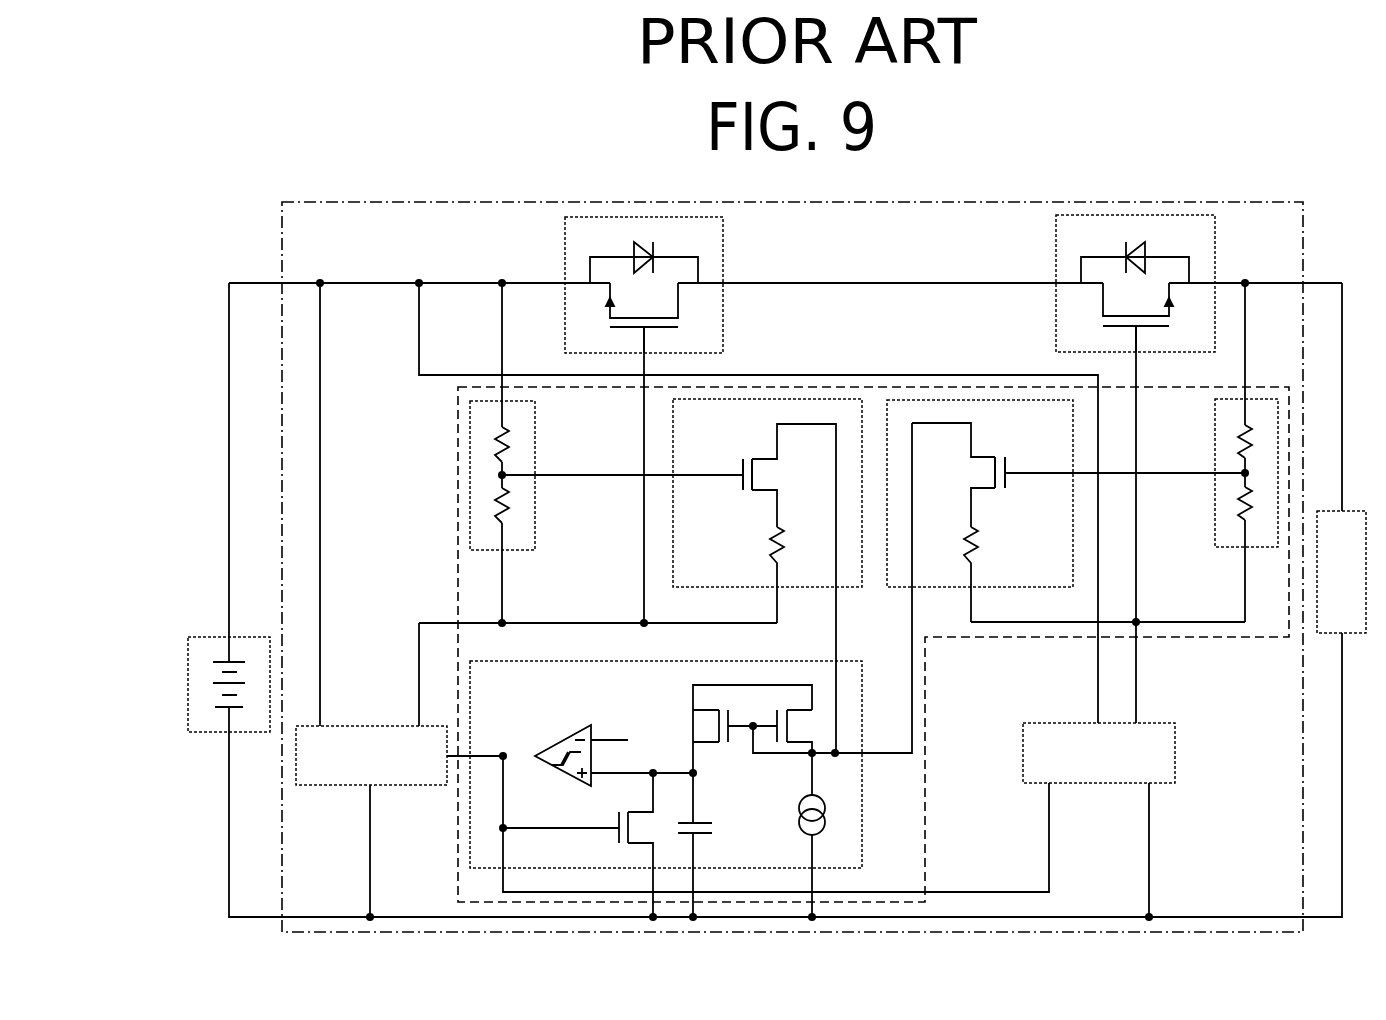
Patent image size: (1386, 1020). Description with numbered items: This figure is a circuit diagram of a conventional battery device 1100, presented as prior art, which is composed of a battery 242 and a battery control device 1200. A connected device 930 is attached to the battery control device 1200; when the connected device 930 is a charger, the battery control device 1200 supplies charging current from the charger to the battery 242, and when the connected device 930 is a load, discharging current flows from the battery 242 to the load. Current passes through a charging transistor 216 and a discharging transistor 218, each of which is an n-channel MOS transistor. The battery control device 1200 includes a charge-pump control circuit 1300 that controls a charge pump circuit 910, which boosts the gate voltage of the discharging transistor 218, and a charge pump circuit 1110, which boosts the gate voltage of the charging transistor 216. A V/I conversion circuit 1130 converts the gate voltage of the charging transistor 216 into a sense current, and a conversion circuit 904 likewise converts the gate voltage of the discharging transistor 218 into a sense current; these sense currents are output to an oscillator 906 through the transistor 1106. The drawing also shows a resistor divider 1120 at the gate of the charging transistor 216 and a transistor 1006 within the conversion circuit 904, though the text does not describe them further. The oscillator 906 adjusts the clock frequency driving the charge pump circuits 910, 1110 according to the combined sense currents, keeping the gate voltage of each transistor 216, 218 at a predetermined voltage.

The battery device 1100 is at (283, 172).
The battery control device 1200 is at (1232, 203).
The charging transistor 216 is at (565, 226).
The discharging transistor 218 is at (1056, 226).
The voltage divider 1120 is at (535, 406).
The transistor 1106 is at (745, 488).
The V/I conversion circuit 1130 is at (767, 576).
The oscillator 906 is at (470, 663).
The transistor 1006 is at (1003, 487).
The conversion circuit 904 is at (980, 511).
The charge-pump control circuit 1300 is at (1212, 640).
The connected device 930 is at (1361, 511).
The battery 242 is at (203, 637).
The charge pump circuit 1110 is at (368, 726).
The charge pump circuit 910 is at (1030, 723).